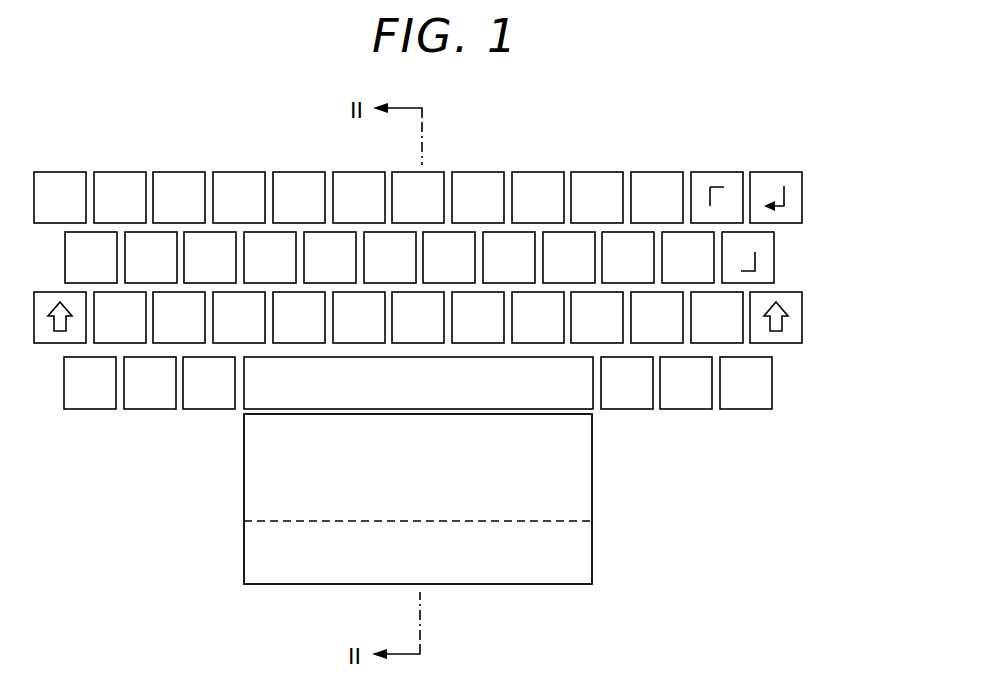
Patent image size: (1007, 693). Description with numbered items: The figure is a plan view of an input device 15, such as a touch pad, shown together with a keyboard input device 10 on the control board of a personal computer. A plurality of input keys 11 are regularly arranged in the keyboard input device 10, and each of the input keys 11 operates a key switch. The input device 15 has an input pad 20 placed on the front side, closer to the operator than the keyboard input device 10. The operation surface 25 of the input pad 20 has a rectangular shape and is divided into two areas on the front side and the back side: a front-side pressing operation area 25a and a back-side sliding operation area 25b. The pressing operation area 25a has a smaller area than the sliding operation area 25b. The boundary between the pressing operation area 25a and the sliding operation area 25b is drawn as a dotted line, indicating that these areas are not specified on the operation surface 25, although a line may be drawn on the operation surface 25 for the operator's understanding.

The keyboard input device 10 is at (817, 172).
The input keys 11 is at (592, 172).
The input device 15 is at (208, 481).
The input pad 20 is at (588, 564).
The operation surface 25 is at (670, 473).
The pressing operation area 25a is at (570, 541).
The sliding operation area 25b is at (570, 493).